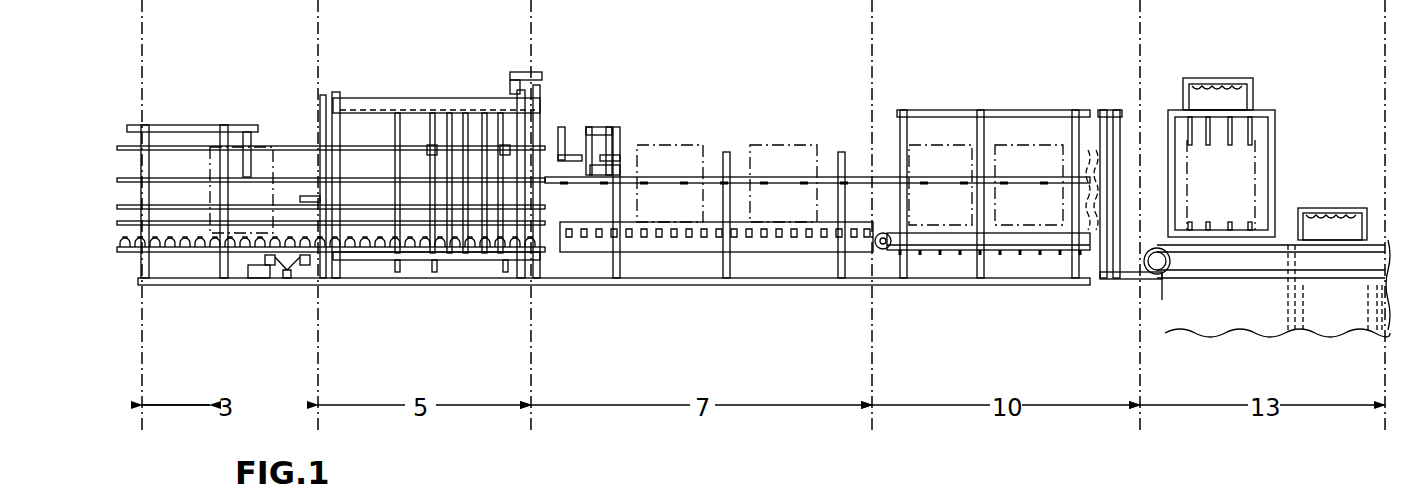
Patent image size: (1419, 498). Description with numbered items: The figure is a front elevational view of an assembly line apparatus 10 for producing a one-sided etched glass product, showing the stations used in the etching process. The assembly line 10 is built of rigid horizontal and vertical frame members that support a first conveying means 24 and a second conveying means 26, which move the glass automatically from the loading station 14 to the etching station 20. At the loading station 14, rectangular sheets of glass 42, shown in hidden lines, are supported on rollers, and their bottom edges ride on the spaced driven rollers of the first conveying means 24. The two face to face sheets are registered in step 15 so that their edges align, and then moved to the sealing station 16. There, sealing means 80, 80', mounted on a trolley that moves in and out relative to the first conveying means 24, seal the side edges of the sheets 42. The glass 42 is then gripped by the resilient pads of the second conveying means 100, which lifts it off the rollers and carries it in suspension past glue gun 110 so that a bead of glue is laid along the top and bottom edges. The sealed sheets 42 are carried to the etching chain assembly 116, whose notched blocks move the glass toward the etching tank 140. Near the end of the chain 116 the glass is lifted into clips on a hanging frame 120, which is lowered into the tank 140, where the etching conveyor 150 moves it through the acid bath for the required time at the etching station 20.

The assembly line apparatus 10 is at (673, 122).
The loading station 14 is at (184, 293).
The registering step 15 is at (270, 294).
The sealing station 16 is at (541, 290).
The etching station 20 is at (1256, 337).
The first conveying means 24 is at (248, 253).
The second conveying means 26 is at (800, 246).
The sheets of glass 42 is at (270, 150).
The side edge sealing means 80 is at (444, 106).
The side edge sealing means 80' is at (547, 115).
The second conveying means 100 is at (681, 246).
The glue gun 110 is at (572, 152).
The etching chain assembly 116 is at (937, 251).
The hanging frame 120 is at (1278, 173).
The etching tank 140 is at (1200, 276).
The etching conveyor 150 is at (1338, 316).